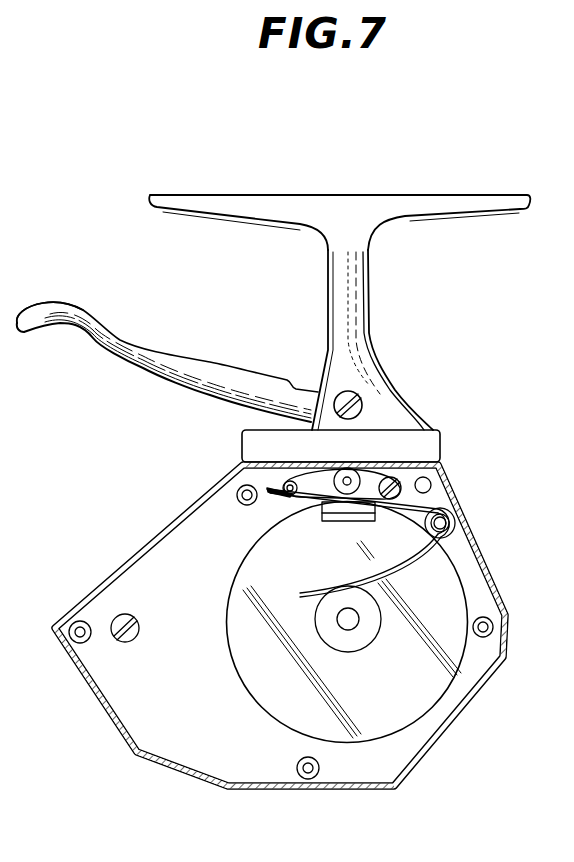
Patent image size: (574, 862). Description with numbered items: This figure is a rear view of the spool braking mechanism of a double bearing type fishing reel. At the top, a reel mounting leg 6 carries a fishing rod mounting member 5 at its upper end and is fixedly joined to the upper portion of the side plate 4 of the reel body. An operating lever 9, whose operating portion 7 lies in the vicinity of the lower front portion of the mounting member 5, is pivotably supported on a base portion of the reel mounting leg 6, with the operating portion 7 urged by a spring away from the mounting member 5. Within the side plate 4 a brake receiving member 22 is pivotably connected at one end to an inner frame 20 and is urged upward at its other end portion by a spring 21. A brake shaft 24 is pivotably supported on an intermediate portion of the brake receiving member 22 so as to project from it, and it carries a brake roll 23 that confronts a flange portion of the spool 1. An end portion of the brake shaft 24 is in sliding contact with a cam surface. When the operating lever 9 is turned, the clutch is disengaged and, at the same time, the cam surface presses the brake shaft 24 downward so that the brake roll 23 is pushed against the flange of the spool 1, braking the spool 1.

The spool 1 is at (355, 517).
The side plate 4 is at (450, 488).
The fishing rod mounting member 5 is at (472, 207).
The reel mounting leg 6 is at (353, 273).
The operating portion 7 is at (48, 312).
The operating lever 9 is at (201, 358).
The inner frame 20 is at (193, 548).
The spring 21 is at (412, 560).
The brake receiving member 22 is at (313, 486).
The brake roll 23 is at (365, 478).
The brake shaft 24 is at (349, 468).